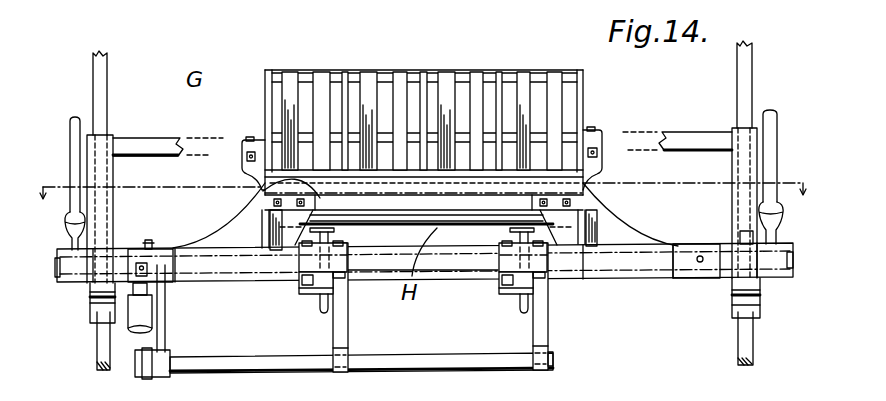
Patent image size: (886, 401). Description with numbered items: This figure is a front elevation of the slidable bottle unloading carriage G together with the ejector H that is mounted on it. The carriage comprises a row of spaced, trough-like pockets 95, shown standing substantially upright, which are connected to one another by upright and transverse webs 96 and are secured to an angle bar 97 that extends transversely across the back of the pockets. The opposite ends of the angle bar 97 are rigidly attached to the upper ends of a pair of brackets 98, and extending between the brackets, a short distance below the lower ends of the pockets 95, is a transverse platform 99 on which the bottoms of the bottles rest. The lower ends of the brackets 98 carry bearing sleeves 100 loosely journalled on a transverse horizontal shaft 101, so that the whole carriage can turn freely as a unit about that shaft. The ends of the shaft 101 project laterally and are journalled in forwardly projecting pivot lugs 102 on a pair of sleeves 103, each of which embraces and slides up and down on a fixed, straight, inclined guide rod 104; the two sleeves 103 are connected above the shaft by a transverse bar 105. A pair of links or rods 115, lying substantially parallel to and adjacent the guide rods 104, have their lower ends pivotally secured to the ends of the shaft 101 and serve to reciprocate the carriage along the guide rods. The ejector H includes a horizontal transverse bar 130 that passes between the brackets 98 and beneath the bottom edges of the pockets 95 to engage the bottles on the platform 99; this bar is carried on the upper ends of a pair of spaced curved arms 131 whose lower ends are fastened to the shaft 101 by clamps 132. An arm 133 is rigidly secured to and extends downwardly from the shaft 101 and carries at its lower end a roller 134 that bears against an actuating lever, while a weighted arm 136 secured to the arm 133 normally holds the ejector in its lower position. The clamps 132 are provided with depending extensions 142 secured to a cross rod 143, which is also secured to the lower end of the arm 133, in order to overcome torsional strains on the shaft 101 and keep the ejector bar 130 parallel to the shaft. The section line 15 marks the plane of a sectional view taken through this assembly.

The section line 15- 15 is at (424, 200).
The pockets 95 is at (385, 88).
The webs 96 is at (413, 80).
The angle bar 97 is at (302, 154).
The brackets 98 is at (630, 214).
The platform 99 is at (263, 186).
The bearing sleeves 100 is at (234, 276).
The shaft 101 is at (457, 264).
The pivot lugs 102 is at (121, 254).
The sleeves 103 is at (112, 170).
The guide rod 104 is at (98, 66).
The transverse bar 105 is at (157, 146).
The links or rods 115 is at (78, 140).
The transverse bar 130 is at (460, 222).
The curved arms 131 is at (326, 302).
The clamps 132 is at (350, 250).
The arm 133 is at (166, 313).
The roller 134 is at (146, 373).
The weighted arm 136 is at (128, 292).
The depending extensions 142 is at (337, 333).
The cross rod 143 is at (393, 366).